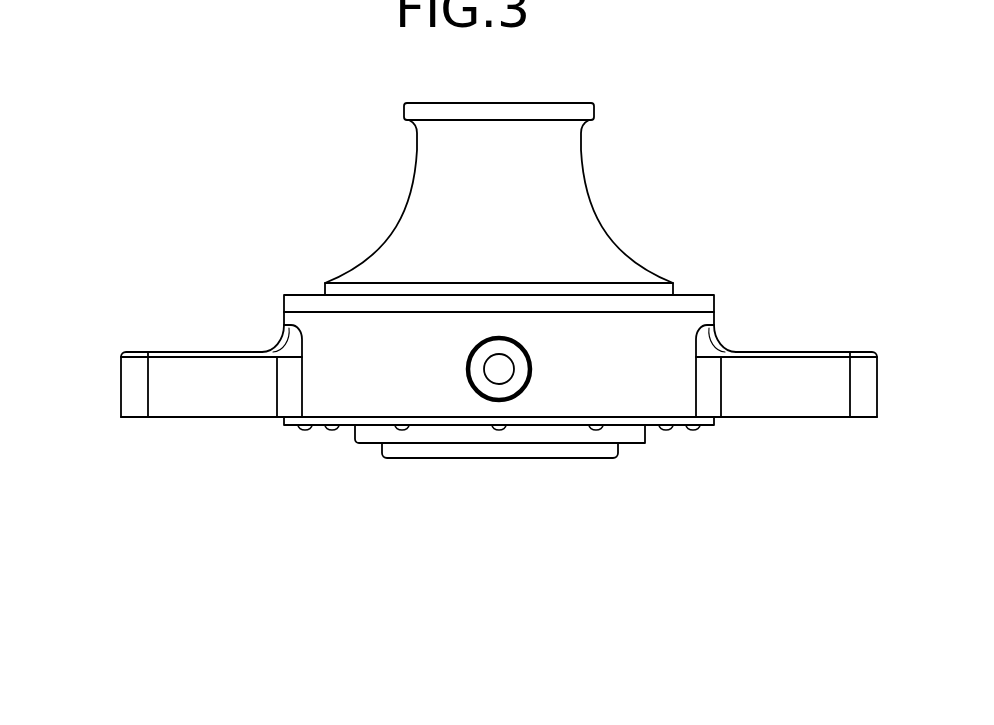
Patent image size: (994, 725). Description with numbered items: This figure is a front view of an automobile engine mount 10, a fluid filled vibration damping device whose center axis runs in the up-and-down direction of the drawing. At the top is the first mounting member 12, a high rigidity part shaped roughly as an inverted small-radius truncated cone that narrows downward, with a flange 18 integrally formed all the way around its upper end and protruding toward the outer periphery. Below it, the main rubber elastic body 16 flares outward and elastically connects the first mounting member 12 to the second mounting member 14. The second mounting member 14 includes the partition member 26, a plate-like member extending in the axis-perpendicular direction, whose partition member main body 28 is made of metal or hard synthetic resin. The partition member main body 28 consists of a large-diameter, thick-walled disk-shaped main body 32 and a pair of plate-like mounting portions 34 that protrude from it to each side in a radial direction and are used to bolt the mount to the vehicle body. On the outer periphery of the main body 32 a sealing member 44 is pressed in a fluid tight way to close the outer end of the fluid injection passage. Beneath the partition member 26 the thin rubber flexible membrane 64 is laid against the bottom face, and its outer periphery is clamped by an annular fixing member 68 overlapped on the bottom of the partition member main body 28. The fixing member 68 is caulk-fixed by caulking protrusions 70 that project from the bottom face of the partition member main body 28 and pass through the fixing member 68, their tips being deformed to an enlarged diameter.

The engine mount 10 is at (688, 182).
The first mounting member 12 is at (548, 94).
The flange 18 is at (565, 110).
The second mounting member 14 is at (105, 403).
The main rubber elastic body 16 is at (423, 220).
The partition member 26 is at (479, 333).
The partition member main body 28 is at (278, 316).
The main body 32 is at (618, 338).
The mounting portion 34 is at (210, 395).
The sealing member 44 is at (499, 369).
The flexible membrane 64 is at (525, 450).
The fixing member 68 is at (368, 435).
The caulking protrusions 70 is at (305, 431).